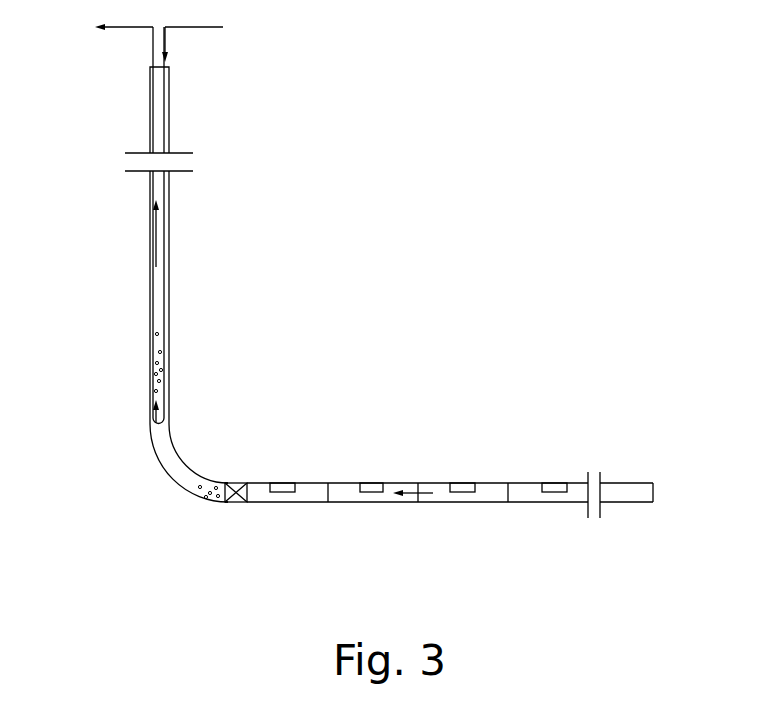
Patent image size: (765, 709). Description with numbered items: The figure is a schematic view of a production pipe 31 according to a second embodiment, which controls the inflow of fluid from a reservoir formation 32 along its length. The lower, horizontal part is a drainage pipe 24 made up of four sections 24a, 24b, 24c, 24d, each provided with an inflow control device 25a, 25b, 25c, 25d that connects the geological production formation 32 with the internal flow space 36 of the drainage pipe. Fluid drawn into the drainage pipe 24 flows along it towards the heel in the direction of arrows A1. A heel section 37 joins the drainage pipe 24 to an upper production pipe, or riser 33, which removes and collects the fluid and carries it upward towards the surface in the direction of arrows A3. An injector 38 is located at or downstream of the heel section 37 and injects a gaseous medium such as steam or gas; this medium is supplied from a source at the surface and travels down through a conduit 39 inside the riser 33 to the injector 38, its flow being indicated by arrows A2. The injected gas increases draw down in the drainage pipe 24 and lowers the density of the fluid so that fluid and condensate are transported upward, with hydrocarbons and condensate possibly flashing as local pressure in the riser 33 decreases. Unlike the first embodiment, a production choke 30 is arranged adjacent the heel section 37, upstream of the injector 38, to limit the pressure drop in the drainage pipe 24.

The drainage pipe 24 is at (240, 539).
The drainage pipe section 24a is at (275, 503).
The drainage pipe section 24b is at (380, 503).
The drainage pipe section 24c is at (465, 503).
The drainage pipe section 24d is at (558, 503).
The inflow control device 25a is at (283, 482).
The inflow control device 25b is at (372, 482).
The inflow control device 25c is at (463, 482).
The inflow control device 25d is at (553, 482).
The production choke 30 is at (233, 484).
The production pipe 31 is at (94, 406).
The reservoir formation 32 is at (425, 284).
The riser 33 is at (151, 312).
The internal flow space 36 is at (578, 490).
The heel section 37 is at (175, 487).
The injector 38 is at (188, 410).
The conduit 39 is at (167, 295).
The direction of flow in the drainage pipe A1 is at (411, 503).
The direction of flow of the gaseous medium A2 is at (198, 27).
The direction of flow in the riser A3 is at (133, 27).